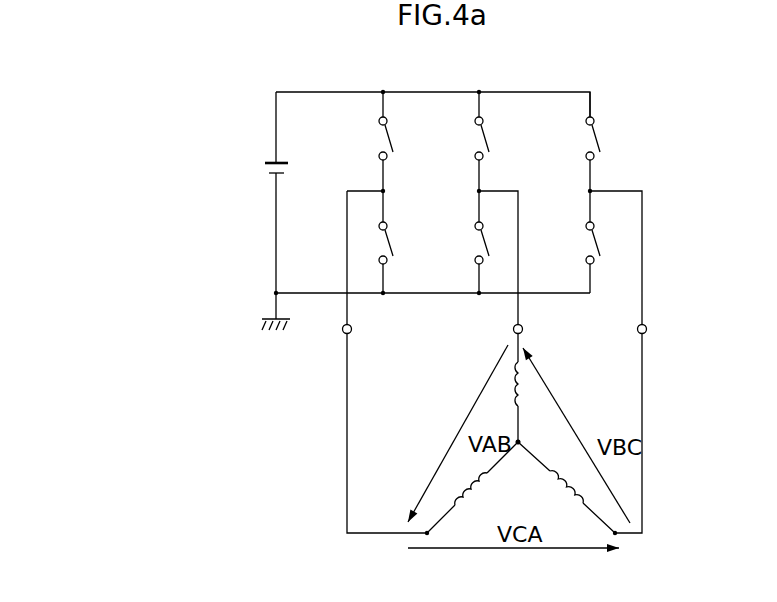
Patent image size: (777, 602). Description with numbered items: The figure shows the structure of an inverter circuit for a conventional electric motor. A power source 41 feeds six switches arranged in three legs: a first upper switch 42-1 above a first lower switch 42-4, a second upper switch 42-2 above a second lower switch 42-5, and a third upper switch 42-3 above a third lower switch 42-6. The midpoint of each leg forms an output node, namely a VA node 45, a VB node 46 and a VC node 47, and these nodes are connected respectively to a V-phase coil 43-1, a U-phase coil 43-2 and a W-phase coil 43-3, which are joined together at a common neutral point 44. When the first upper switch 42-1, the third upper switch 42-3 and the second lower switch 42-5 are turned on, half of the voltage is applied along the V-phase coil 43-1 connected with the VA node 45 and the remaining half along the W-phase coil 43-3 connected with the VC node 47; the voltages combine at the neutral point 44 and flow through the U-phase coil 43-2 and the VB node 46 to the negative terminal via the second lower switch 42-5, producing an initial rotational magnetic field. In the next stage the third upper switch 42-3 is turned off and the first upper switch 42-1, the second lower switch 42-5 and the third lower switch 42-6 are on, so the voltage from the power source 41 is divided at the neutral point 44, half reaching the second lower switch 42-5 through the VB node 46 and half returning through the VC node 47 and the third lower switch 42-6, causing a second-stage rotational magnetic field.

The power source 41 is at (268, 173).
The S1 switch 42-1 is at (388, 138).
The S3 switch 42-2 is at (484, 139).
The S5 switch 42-3 is at (598, 141).
The S2 switch 42-4 is at (382, 258).
The S4 switch 42-5 is at (476, 262).
The S6 switch 42-6 is at (598, 246).
The V-phase coil 43-1 is at (462, 503).
The U-phase coil 43-2 is at (527, 378).
The W-phase coil 43-3 is at (581, 482).
The neutral point 44 is at (518, 447).
The VA node 45 is at (342, 330).
The VB node 46 is at (513, 330).
The VC node 47 is at (646, 327).